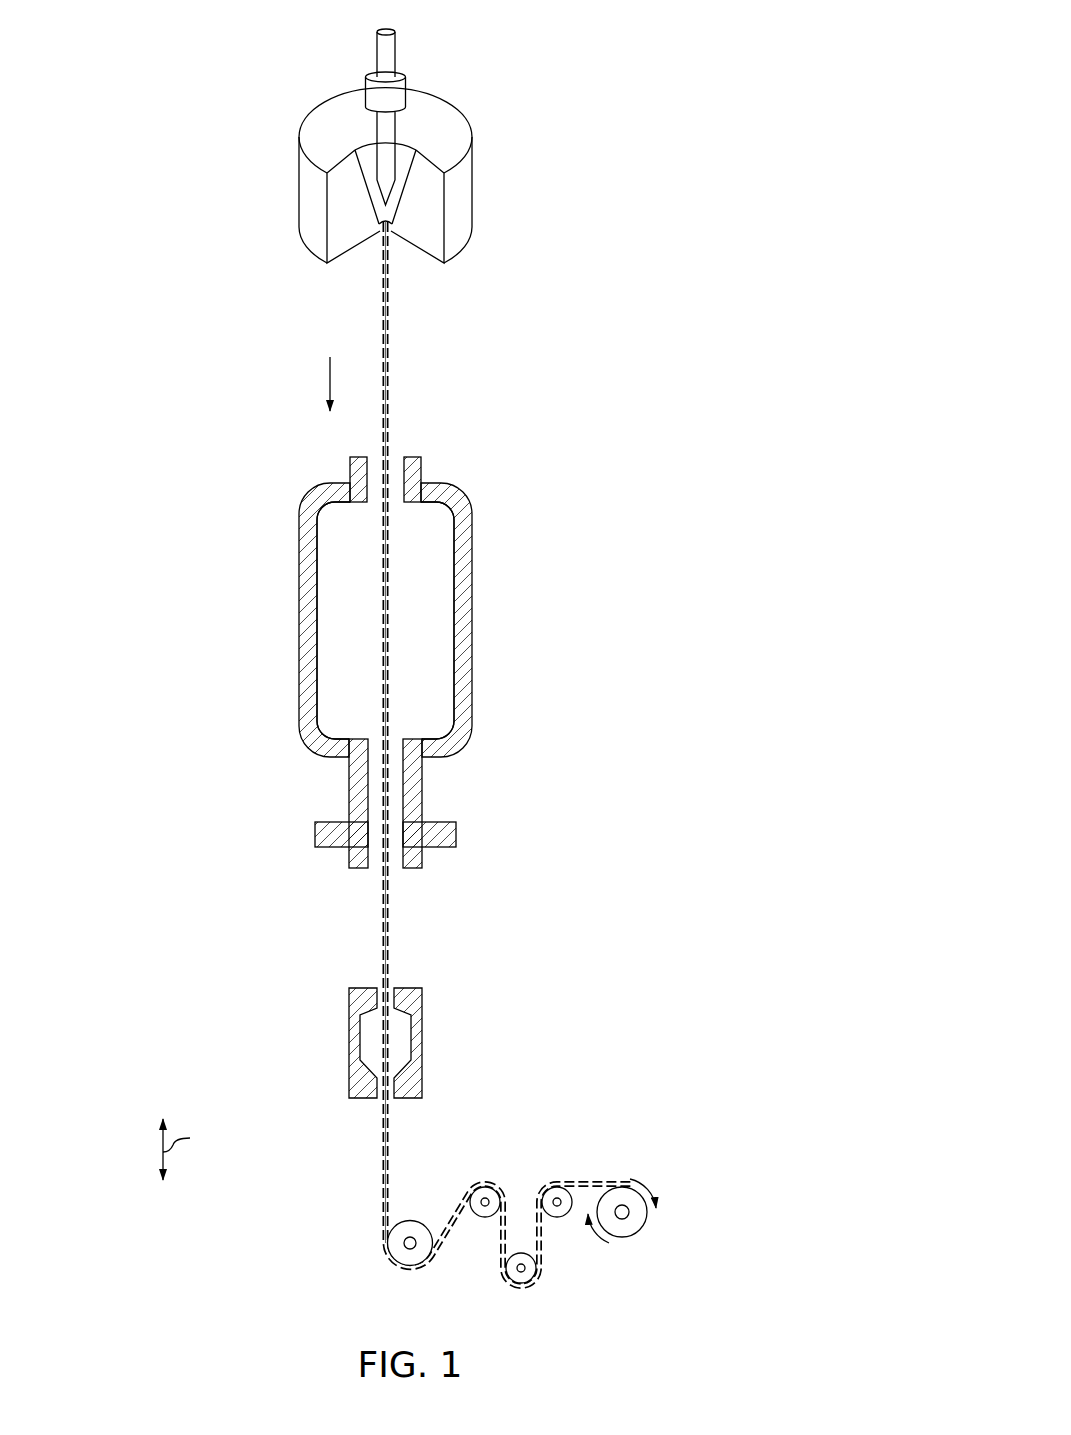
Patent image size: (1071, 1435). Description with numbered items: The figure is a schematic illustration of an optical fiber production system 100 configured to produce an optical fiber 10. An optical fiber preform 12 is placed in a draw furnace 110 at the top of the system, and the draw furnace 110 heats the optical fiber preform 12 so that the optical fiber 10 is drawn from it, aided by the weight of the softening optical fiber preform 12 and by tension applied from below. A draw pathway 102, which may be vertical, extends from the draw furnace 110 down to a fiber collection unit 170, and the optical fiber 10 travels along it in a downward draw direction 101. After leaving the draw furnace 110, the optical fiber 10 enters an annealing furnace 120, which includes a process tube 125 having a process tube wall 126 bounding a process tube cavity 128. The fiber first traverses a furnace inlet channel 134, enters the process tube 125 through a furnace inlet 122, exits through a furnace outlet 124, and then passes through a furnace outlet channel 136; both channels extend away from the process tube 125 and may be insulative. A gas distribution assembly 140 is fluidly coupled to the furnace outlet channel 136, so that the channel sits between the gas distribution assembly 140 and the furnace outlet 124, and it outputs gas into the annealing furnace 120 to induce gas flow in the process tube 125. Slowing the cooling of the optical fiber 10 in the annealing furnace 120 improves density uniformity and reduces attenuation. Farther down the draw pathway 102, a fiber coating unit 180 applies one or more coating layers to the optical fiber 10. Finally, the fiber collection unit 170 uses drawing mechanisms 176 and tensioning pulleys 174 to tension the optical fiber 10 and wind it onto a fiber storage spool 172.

The optical fiber production system 100 is at (702, 76).
The optical fiber 10 is at (377, 253).
The optical fiber preform 12 is at (406, 50).
The draw furnace 110 is at (444, 134).
The draw direction 101 is at (330, 372).
The draw pathway 102 is at (392, 403).
The annealing furnace 120 is at (397, 649).
The furnace inlet 122 is at (395, 479).
The furnace outlet 124 is at (371, 745).
The process tube 125 is at (299, 692).
The process tube wall 126 is at (317, 666).
The process tube cavity 128 is at (349, 603).
The furnace inlet channel 134 is at (349, 476).
The furnace outlet channel 136 is at (349, 822).
The gas distribution assembly 140 is at (437, 843).
The fiber coating unit 180 is at (430, 1031).
The fiber collection unit 170 is at (508, 1262).
The fiber storage spool 172 is at (660, 1183).
The tensioning pulleys 174 is at (379, 1269).
The drawing mechanisms 176 is at (485, 1219).